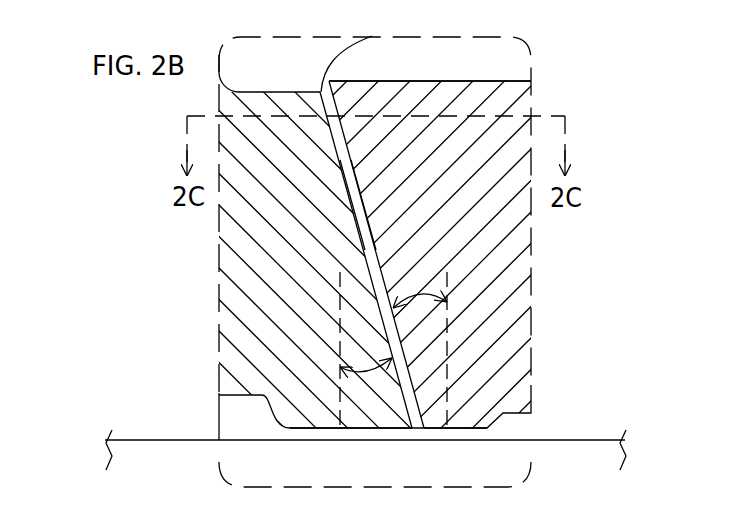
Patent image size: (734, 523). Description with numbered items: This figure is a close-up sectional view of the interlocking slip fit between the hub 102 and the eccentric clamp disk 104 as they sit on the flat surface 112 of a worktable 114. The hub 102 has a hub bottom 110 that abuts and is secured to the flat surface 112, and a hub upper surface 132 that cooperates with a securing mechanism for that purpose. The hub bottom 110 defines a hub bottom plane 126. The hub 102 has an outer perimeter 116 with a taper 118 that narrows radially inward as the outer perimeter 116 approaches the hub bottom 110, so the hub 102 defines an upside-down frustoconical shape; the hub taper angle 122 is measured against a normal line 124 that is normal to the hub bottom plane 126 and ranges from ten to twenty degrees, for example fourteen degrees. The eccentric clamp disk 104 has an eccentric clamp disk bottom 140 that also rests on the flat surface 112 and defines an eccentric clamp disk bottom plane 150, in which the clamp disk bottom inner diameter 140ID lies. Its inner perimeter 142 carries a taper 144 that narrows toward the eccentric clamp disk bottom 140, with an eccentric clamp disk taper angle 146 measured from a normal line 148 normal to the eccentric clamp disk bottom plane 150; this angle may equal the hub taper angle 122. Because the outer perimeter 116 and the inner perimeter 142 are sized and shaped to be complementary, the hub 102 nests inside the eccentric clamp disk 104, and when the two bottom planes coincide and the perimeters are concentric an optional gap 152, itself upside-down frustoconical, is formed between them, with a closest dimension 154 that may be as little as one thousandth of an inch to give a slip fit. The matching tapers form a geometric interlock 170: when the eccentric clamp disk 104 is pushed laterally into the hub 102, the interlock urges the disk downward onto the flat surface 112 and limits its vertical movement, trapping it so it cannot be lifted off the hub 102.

The geometric interlock 170 is at (553, 90).
The hub 102 is at (507, 287).
The eccentric clamp disk 104 is at (245, 288).
The hub upper surface 132 is at (427, 81).
The closest dimension 154 is at (337, 155).
The gap 152 is at (350, 148).
The inner perimeter 142 is at (303, 205).
The taper 144 is at (354, 217).
The outer perimeter 116 is at (415, 205).
The taper 118 is at (369, 226).
The hub taper angle 122 is at (418, 297).
The normal line 124 is at (448, 332).
The normal line 148 is at (340, 332).
The eccentric clamp disk taper angle 146 is at (367, 370).
The flat surface 112 is at (390, 433).
The worktable 114 is at (565, 440).
The eccentric clamp disk bottom 140 is at (271, 453).
The clamp disk bottom inner diameter 140ID is at (271, 453).
The eccentric clamp disk bottom plane 150 is at (320, 428).
The hub bottom 110 is at (498, 453).
The hub bottom plane 126 is at (458, 430).